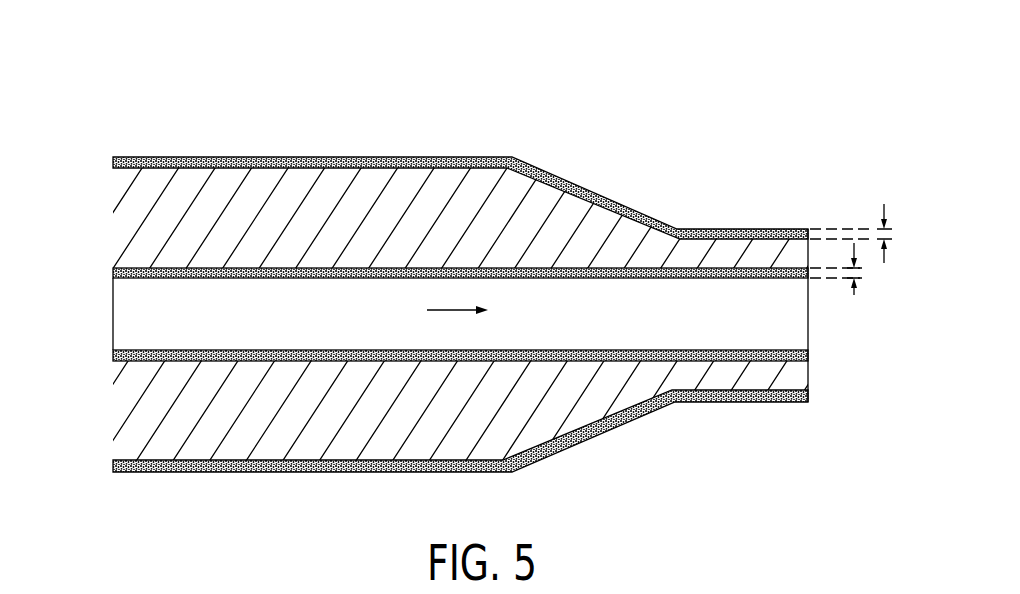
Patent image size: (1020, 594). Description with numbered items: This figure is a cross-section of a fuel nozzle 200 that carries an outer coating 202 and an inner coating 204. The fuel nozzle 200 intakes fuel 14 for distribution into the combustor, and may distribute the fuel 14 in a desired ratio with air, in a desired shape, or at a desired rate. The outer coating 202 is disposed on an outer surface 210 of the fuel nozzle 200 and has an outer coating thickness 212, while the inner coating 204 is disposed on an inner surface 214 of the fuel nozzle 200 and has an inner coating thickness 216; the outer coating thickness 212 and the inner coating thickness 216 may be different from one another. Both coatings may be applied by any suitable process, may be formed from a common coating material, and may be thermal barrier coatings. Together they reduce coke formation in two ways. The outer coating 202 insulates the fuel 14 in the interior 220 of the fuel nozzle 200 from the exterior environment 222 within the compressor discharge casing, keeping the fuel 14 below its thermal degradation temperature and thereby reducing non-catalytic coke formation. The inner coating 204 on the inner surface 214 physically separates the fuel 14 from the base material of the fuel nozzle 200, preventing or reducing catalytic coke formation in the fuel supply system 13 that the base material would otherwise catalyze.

The fuel supply system 13 is at (707, 55).
The fuel 14 is at (453, 310).
The fuel nozzle 200 is at (625, 118).
The outer coating 202 is at (105, 163).
The inner coating 204 is at (105, 273).
The outer surface 210 is at (427, 156).
The outer coating thickness 212 is at (884, 221).
The inner surface 214 is at (234, 271).
The inner coating thickness 216 is at (854, 283).
The interior 220 is at (653, 326).
The exterior environment 222 is at (653, 188).